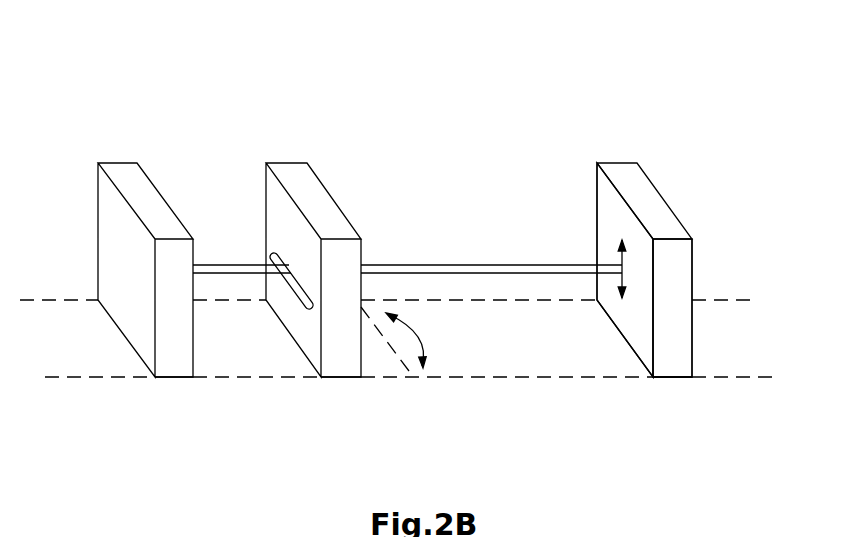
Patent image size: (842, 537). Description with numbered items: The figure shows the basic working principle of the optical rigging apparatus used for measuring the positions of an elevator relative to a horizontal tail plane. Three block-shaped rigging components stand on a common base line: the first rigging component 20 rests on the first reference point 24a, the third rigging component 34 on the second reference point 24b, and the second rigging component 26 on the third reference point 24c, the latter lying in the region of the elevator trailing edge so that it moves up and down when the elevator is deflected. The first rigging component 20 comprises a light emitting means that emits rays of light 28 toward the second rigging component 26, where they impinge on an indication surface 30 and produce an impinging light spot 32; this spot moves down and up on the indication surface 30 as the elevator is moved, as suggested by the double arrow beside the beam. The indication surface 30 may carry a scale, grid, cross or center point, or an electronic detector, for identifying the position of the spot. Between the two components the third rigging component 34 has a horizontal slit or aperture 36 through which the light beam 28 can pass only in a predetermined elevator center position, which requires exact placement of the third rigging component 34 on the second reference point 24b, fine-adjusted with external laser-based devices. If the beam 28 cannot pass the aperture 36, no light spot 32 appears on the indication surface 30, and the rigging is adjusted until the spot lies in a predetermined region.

The first rigging component 20 is at (114, 148).
The third rigging component 34 is at (279, 148).
The second rigging component 26 is at (633, 132).
The rays of light 28 is at (487, 268).
The indication surface 30 is at (602, 200).
The impinging light spot 32 is at (653, 282).
The horizontal slit or aperture 36 is at (301, 296).
The first reference point 24a is at (168, 395).
The second reference point 24b is at (335, 393).
The third reference point 24c is at (670, 393).